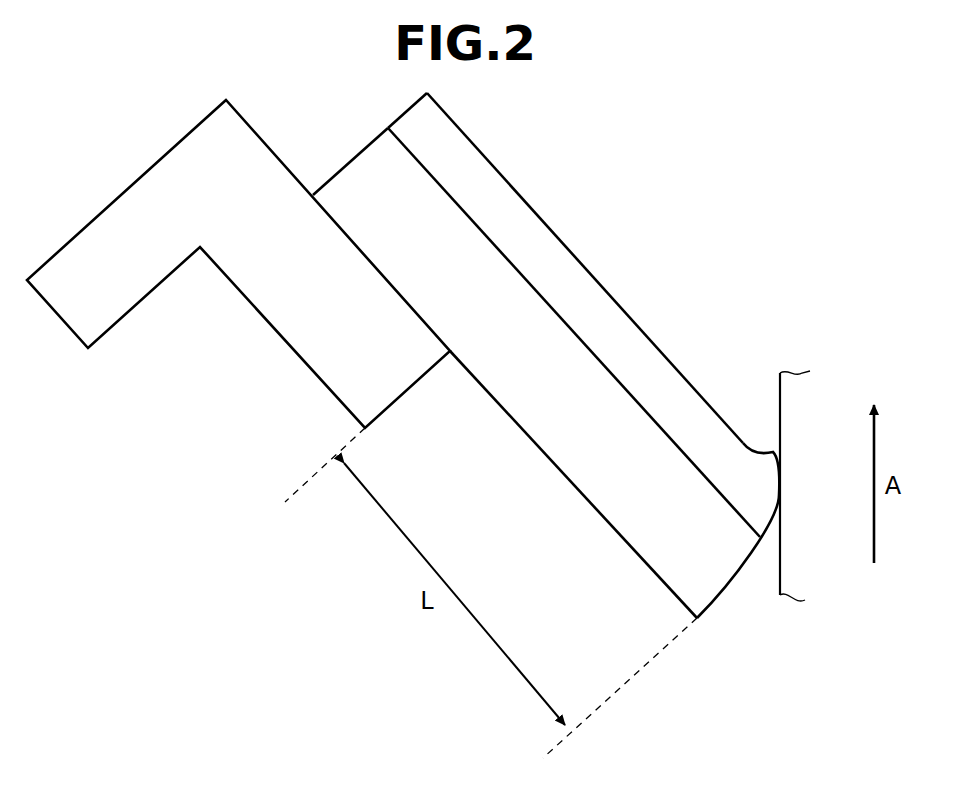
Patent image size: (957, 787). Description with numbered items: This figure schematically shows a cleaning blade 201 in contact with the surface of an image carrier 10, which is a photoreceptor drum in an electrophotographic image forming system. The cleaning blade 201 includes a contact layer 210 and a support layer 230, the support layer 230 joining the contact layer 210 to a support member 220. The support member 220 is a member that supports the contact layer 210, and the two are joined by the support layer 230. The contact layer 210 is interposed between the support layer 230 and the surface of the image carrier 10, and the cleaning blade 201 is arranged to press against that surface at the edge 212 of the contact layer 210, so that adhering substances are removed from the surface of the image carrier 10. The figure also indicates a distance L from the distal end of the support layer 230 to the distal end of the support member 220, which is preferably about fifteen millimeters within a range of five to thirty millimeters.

The cleaning blade 201 is at (700, 273).
The contact layer 210 is at (487, 158).
The edge 212 is at (774, 452).
The support member 220 is at (112, 202).
The support layer 230 is at (352, 157).
The image carrier 10 is at (795, 393).